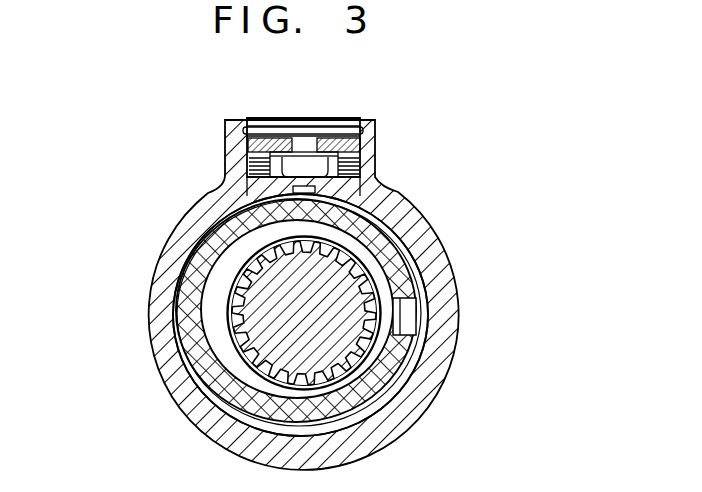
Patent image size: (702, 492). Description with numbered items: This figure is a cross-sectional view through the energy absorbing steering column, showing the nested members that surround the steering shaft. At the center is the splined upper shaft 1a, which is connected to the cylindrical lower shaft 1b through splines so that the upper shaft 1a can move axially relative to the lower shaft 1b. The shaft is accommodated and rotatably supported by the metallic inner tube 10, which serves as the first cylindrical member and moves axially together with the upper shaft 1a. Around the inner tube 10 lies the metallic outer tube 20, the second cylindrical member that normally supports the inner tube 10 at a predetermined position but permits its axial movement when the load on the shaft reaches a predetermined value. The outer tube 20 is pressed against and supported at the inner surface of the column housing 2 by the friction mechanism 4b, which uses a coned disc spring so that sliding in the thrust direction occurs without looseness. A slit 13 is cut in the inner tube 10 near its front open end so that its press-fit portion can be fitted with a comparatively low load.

The upper shaft 1a is at (258, 343).
The lower shaft 1b is at (228, 378).
The column housing 2 is at (193, 215).
The friction mechanism 4b is at (275, 136).
The inner tube 10 is at (185, 251).
The slit 13 is at (412, 320).
The outer tube 20 is at (403, 198).